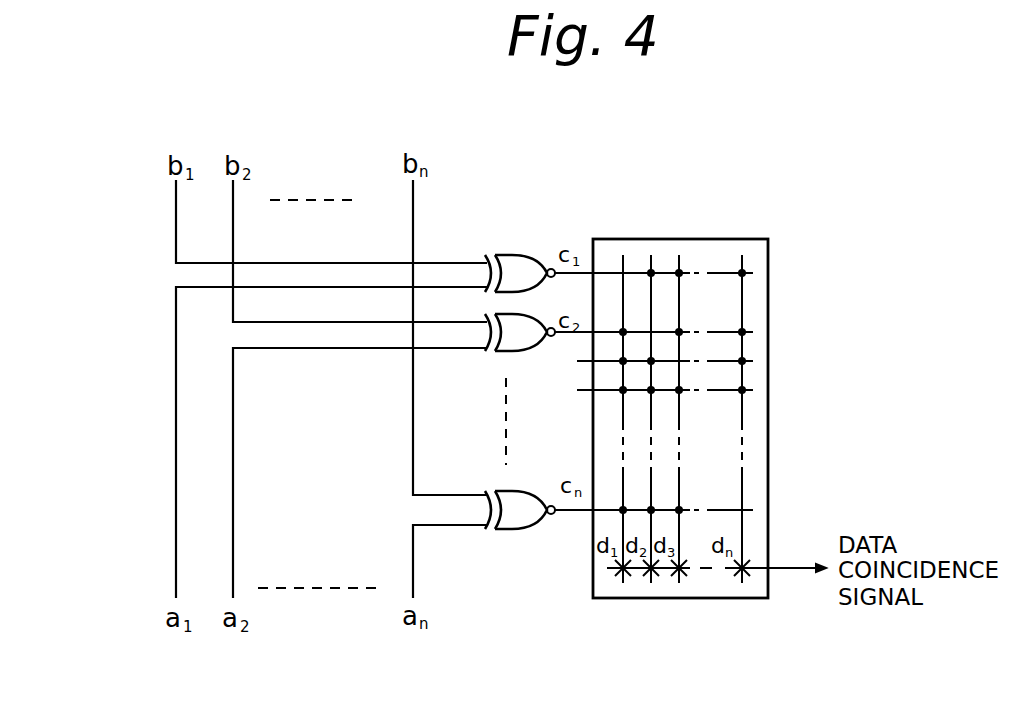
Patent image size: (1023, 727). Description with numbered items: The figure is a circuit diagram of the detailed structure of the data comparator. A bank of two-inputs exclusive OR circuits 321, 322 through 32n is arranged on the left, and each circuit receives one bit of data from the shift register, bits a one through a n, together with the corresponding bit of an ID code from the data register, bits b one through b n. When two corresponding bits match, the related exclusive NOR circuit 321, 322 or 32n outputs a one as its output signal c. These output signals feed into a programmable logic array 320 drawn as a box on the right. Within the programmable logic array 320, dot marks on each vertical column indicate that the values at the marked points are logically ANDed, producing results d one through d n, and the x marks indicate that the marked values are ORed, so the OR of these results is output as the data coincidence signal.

The programmable logic array 320 is at (730, 239).
The two-inputs exclusive OR circuit 321 is at (519, 255).
The two-inputs exclusive OR circuit 322 is at (528, 351).
The two-inputs exclusive OR circuit 32n is at (541, 492).